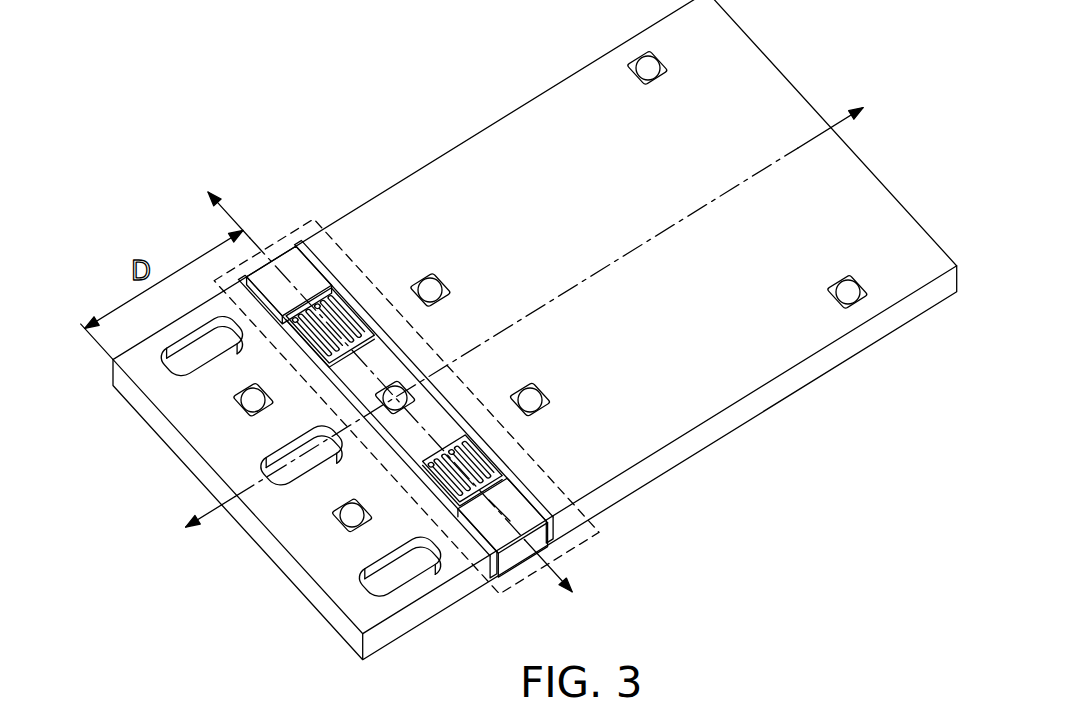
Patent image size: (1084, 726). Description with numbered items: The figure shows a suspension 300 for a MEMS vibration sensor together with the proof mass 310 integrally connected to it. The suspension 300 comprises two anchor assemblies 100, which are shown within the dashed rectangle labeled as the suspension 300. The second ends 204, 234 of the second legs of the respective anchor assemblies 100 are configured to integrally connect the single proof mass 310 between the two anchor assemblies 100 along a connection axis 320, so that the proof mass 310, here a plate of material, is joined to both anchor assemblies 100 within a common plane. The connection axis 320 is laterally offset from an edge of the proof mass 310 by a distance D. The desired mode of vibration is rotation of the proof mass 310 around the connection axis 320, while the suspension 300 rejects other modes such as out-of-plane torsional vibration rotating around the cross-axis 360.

The anchor assembly 100 is at (292, 268).
The second end of second leg 204 is at (330, 379).
The second end of second leg 234 is at (386, 338).
The suspension 300 is at (513, 590).
The proof mass 310 is at (450, 442).
The connection axis 320 is at (236, 220).
The cross-axis 360 is at (835, 122).